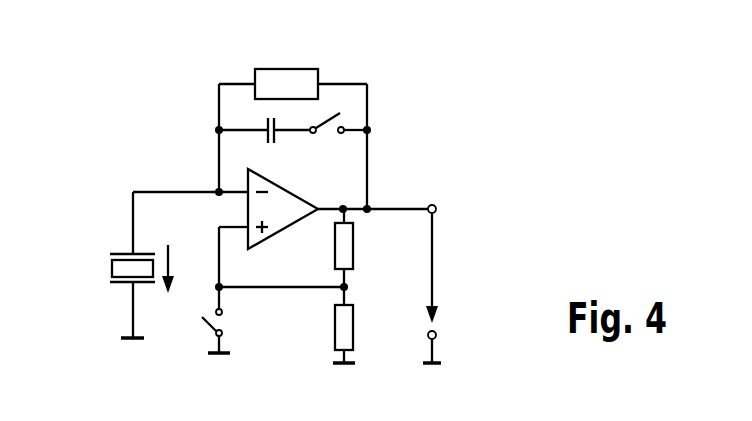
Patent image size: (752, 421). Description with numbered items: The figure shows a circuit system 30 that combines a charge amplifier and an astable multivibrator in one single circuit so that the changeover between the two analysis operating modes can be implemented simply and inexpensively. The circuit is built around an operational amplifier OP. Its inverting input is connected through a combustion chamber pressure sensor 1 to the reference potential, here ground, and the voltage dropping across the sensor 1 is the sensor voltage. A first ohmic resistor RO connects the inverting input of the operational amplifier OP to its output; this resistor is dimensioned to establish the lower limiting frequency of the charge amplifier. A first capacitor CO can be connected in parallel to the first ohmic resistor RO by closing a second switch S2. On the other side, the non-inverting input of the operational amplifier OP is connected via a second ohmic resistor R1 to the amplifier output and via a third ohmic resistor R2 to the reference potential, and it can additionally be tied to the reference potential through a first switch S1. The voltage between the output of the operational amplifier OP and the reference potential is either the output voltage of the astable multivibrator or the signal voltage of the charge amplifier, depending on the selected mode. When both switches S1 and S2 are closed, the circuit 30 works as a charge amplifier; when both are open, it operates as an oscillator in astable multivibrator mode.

The combustion chamber pressure sensor 1 is at (110, 262).
The circuit system 30 is at (326, 201).
The first ohmic resistor RO is at (293, 69).
The first capacitor CO is at (264, 143).
The second switch S2 is at (338, 141).
The first switch S1 is at (228, 331).
The operational amplifier OP is at (283, 206).
The second ohmic resistor R1 is at (361, 246).
The third ohmic resistor R2 is at (361, 327).